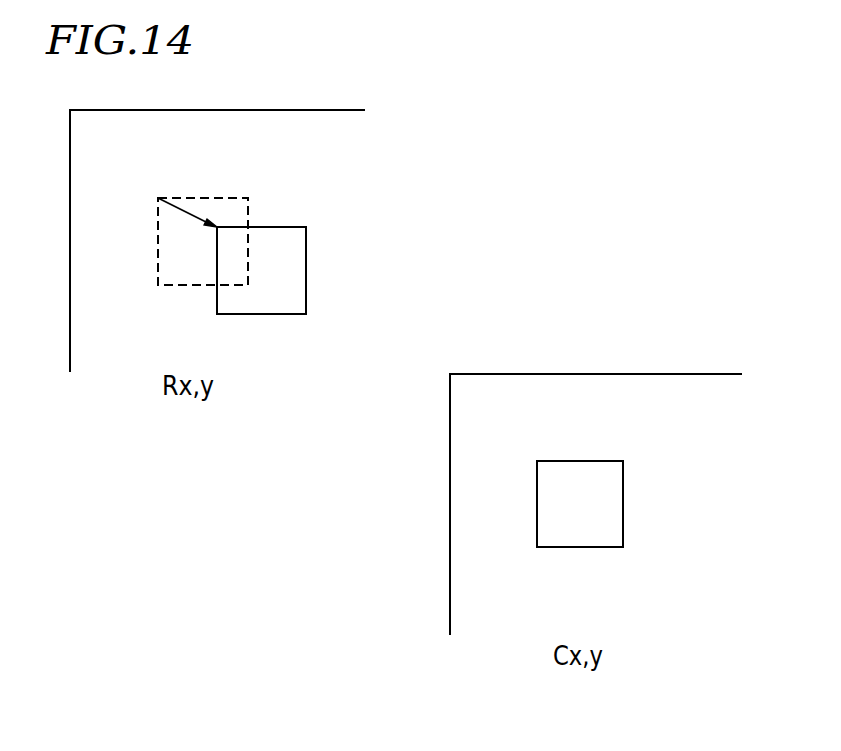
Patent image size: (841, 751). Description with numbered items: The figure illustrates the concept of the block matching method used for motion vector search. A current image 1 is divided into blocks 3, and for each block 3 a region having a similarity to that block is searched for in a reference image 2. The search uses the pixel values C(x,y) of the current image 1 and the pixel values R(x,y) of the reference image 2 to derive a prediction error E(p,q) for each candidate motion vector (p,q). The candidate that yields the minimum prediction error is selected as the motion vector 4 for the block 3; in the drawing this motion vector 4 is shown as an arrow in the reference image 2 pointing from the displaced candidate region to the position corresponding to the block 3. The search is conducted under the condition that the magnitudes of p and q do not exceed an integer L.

The current image 1 is at (578, 374).
The reference image 2 is at (189, 110).
The block 3 is at (592, 461).
The motion vector 4 is at (195, 218).